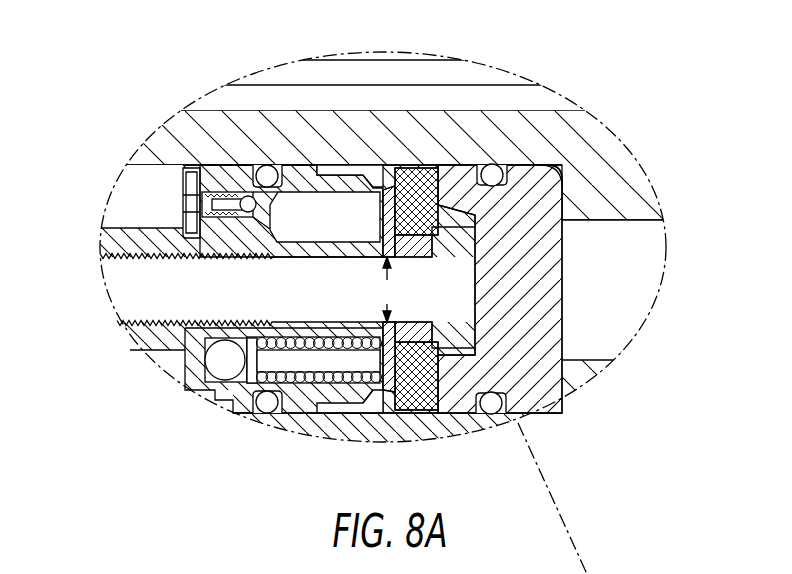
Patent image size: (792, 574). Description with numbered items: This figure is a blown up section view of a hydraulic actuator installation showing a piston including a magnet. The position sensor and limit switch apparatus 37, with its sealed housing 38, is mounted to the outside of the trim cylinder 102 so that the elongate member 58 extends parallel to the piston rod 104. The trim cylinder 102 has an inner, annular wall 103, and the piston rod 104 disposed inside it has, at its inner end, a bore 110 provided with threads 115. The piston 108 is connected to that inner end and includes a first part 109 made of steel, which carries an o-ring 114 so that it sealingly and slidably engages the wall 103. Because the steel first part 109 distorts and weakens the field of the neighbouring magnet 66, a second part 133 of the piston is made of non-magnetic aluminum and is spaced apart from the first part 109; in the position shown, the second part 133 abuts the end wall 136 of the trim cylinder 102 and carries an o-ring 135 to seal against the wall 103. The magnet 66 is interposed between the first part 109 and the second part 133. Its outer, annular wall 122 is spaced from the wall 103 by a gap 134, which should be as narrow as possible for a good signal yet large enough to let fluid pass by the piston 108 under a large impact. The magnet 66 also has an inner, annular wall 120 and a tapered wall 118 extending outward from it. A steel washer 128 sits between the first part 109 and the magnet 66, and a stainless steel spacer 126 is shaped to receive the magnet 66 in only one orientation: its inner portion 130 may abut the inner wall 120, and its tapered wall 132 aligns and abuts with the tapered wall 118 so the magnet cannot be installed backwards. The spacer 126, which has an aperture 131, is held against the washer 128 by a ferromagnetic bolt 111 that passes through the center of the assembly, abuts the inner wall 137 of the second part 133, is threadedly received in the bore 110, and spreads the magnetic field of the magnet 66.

The position sensor and limit switch apparatus 37 is at (333, 52).
The sealed housing 38 is at (407, 52).
The elongate member 58 is at (263, 84).
The trim cylinder 102 is at (167, 143).
The inner, annular wall 103 is at (147, 181).
The threads 115 is at (157, 227).
The bore 110 is at (138, 250).
The bolt 111 is at (147, 292).
The piston rod 104 is at (143, 337).
The first part 109 is at (219, 394).
The o-ring 114 is at (267, 407).
The piston 108 is at (302, 428).
The gap 134 is at (387, 425).
The magnet 66 is at (415, 400).
The outer, annular wall 122 is at (418, 412).
The tapered wall 118 is at (490, 414).
The spacer 126 is at (440, 338).
The inner, annular wall 120 is at (370, 362).
The aperture 131 is at (382, 289).
The inner portion 130 is at (415, 250).
The tapered wall 132 is at (433, 244).
The inner wall 137 is at (477, 298).
The end wall 136 is at (562, 192).
The second part 133 is at (566, 260).
The o-ring 135 is at (489, 168).
The washer 128 is at (380, 195).